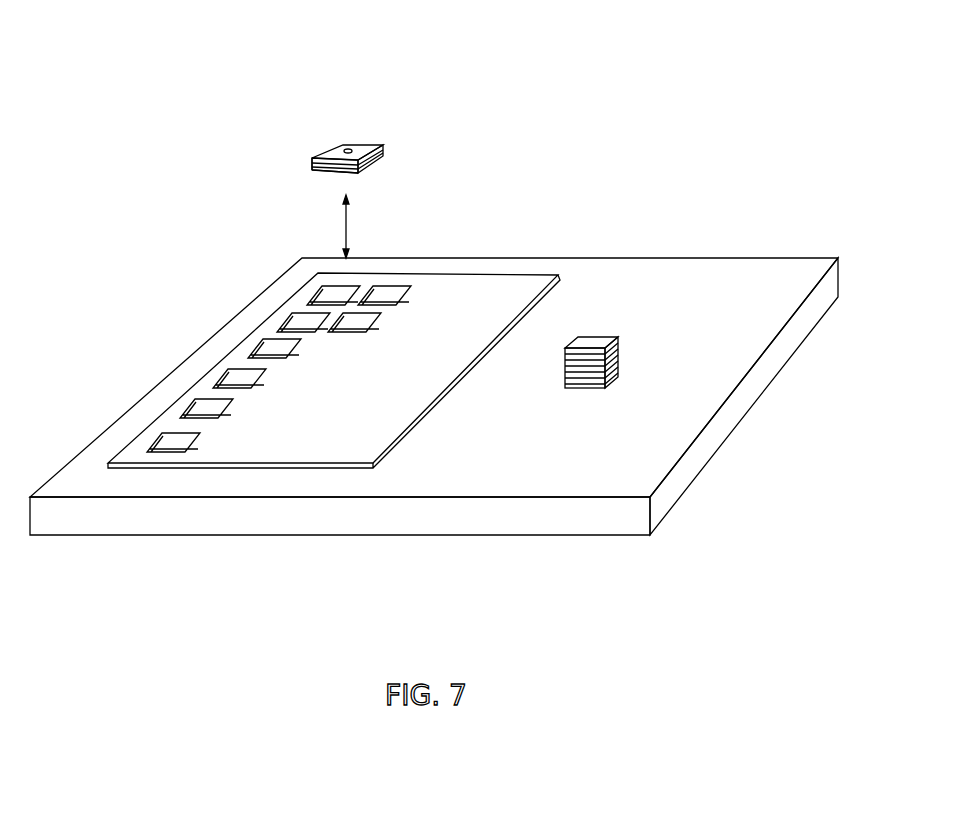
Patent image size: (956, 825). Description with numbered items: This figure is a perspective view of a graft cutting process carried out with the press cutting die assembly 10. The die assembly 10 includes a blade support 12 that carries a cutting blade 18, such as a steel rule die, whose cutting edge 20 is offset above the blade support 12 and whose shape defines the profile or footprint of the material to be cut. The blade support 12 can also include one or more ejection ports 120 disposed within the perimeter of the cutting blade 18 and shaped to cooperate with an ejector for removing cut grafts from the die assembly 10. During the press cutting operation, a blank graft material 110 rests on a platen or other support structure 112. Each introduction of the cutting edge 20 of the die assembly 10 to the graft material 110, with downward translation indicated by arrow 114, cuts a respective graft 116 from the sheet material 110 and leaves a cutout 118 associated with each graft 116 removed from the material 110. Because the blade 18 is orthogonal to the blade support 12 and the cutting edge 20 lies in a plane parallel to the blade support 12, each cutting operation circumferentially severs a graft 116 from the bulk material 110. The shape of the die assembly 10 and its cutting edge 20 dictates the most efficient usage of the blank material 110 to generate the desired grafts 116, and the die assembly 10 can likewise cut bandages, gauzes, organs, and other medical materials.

The press cutting die assembly 10 is at (355, 138).
The blade support 12 is at (355, 138).
The cutting blade 18 is at (318, 166).
The cutting edge 20 is at (337, 176).
The graft material 110 is at (507, 290).
The support structure 112 is at (777, 283).
The arrow 114 is at (360, 219).
The graft 116 is at (594, 336).
The cutout 118 is at (265, 336).
The ejection port 120 is at (352, 152).